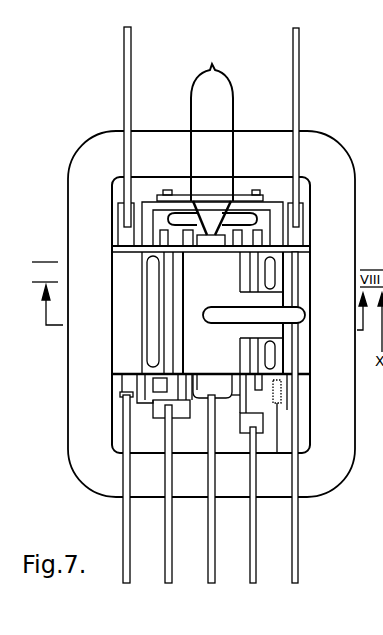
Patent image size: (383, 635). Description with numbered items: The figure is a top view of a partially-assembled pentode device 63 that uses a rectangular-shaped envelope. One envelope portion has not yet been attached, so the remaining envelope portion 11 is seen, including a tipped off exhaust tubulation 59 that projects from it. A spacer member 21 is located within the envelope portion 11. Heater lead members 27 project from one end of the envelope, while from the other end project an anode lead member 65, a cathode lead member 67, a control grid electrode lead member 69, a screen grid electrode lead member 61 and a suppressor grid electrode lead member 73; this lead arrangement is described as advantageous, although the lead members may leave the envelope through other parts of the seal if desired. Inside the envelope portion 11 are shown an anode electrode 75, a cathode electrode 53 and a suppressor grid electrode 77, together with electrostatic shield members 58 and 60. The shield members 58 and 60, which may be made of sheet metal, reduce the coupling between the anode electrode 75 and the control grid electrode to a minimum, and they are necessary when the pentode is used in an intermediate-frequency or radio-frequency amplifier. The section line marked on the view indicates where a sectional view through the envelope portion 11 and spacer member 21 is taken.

The envelope portion 11 is at (68, 456).
The spacer member 21 is at (284, 375).
The heater lead members 27 is at (133, 42).
The cathode electrode 53 is at (214, 400).
The electrostatic shield member 58 is at (148, 240).
The tipped off exhaust tubulation 59 is at (214, 84).
The electrostatic shield member 60 is at (283, 392).
The screen grid electrode lead member 61 is at (256, 574).
The pentode device 63 is at (52, 259).
The anode lead member 65 is at (298, 574).
The cathode lead member 67 is at (215, 574).
The control grid electrode lead member 69 is at (172, 574).
The suppressor grid electrode lead member 73 is at (130, 574).
The anode electrode 75 is at (292, 302).
The suppressor grid electrode 77 is at (148, 367).